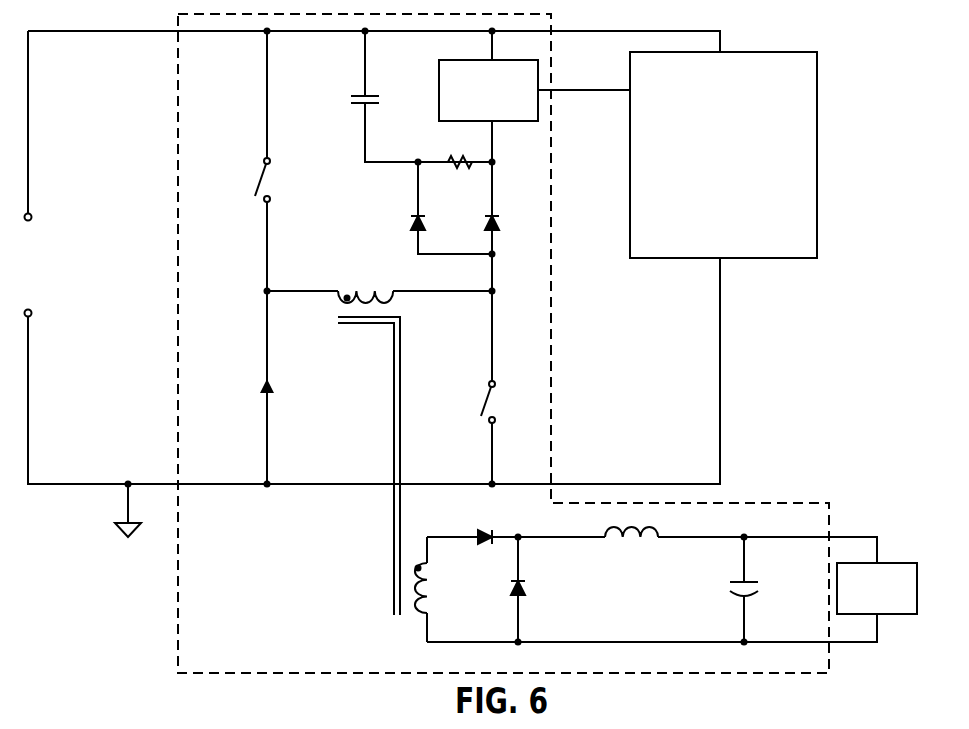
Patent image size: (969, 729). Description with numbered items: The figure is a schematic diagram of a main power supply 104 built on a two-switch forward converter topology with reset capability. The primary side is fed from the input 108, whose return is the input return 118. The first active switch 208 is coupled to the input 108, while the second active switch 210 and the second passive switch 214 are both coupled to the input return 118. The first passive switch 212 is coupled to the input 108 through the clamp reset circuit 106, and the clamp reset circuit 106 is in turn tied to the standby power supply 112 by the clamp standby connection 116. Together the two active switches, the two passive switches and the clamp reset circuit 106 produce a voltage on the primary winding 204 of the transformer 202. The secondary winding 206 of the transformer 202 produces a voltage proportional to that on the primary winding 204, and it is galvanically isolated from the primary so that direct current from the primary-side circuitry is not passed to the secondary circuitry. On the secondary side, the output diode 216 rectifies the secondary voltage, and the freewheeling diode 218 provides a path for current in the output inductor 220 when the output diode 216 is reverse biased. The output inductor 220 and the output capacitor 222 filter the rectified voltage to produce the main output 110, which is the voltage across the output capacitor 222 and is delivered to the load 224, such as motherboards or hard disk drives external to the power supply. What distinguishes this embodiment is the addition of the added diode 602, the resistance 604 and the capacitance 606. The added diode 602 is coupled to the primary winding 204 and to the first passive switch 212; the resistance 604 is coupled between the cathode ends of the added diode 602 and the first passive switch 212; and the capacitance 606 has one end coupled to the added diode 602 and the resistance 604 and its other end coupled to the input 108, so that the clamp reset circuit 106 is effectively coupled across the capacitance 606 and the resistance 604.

The main power supply 104 is at (160, 100).
The clamp reset circuit 106 is at (437, 87).
The input 108 is at (43, 253).
The main output 110 is at (785, 576).
The standby power supply 112 is at (765, 44).
The clamp standby connection 116 is at (574, 100).
The input return 118 is at (118, 512).
The transformer T1 202 is at (390, 366).
The primary winding 204 is at (362, 288).
The secondary winding 206 is at (428, 585).
The active switch S1 208 is at (250, 165).
The active switch S2 210 is at (478, 386).
The passive switch D1 212 is at (500, 232).
The passive switch D2 214 is at (256, 397).
The output diode D3 216 is at (478, 527).
The freewheeling diode D4 218 is at (537, 594).
The output inductor L1 220 is at (630, 555).
The output capacitor C1 222 is at (733, 573).
The load 224 is at (885, 556).
The diode D10 602 is at (392, 213).
The resistance 604 is at (455, 172).
The capacitance 606 is at (345, 103).